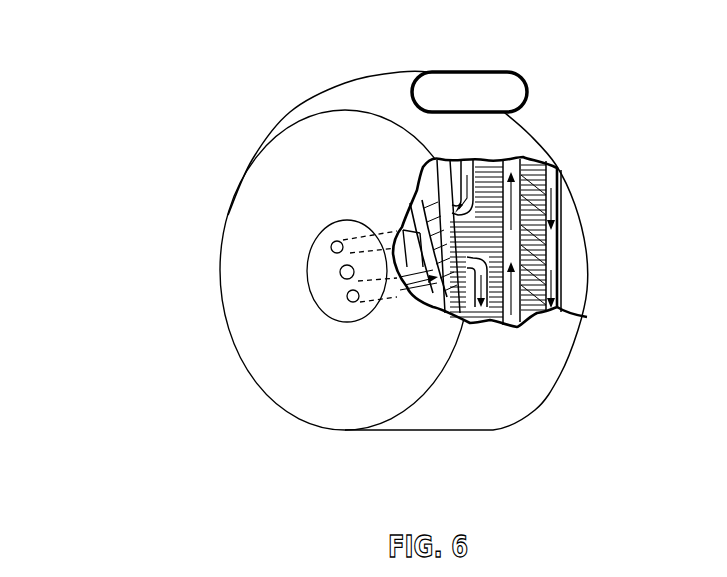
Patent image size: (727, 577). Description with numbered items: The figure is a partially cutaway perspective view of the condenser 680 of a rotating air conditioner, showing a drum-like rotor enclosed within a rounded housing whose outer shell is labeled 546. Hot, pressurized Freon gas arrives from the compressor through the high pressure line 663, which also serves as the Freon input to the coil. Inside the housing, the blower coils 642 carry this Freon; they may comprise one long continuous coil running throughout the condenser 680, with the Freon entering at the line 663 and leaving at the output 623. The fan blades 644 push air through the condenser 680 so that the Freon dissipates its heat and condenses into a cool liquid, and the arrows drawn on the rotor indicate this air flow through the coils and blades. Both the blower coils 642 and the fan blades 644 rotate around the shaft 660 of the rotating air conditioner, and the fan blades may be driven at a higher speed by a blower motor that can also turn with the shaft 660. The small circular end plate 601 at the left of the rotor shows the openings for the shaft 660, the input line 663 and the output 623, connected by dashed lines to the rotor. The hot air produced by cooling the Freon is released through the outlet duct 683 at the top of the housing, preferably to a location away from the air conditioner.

The condenser 680 is at (213, 54).
The outlet duct 683 is at (513, 90).
The housing shell 546 is at (562, 340).
The coils 642 is at (548, 218).
The fan blades 644 is at (525, 262).
The end plate 601 is at (318, 270).
The output 623 is at (333, 243).
The shaft 660 is at (341, 277).
The high pressure line 663 is at (352, 302).